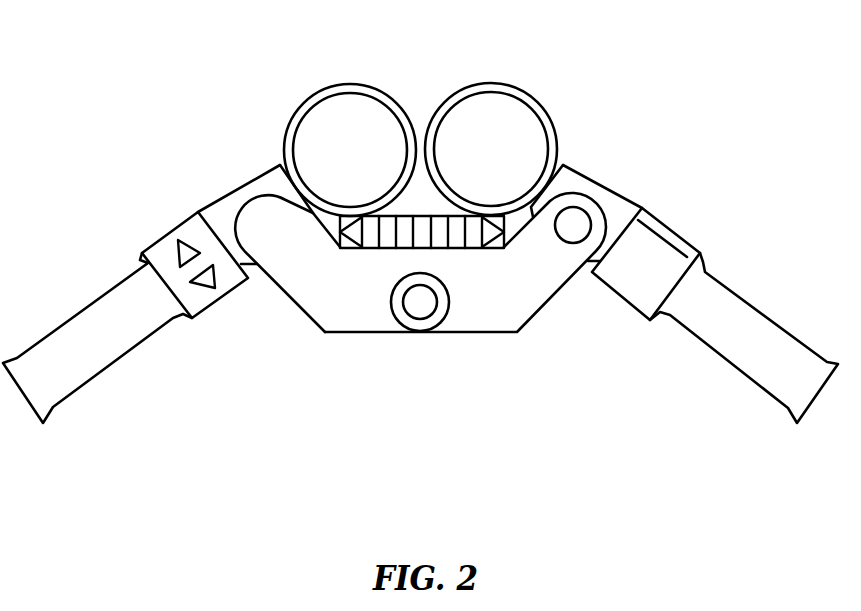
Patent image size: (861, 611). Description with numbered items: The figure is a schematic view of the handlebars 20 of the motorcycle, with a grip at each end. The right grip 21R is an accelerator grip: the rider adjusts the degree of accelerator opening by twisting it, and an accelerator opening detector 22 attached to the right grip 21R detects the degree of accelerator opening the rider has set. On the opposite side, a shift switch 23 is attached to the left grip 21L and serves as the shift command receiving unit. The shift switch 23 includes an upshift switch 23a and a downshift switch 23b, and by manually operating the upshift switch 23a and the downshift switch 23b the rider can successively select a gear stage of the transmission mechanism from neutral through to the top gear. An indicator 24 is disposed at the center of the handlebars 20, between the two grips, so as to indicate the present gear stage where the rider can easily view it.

The handlebars 20 is at (593, 185).
The left grip 21L is at (63, 335).
The right grip 21R is at (760, 320).
The accelerator opening detector 22 is at (672, 233).
The shift switch 23 is at (200, 212).
The upshift switch 23a is at (178, 240).
The downshift switch 23b is at (216, 291).
The indicator 24 is at (422, 217).